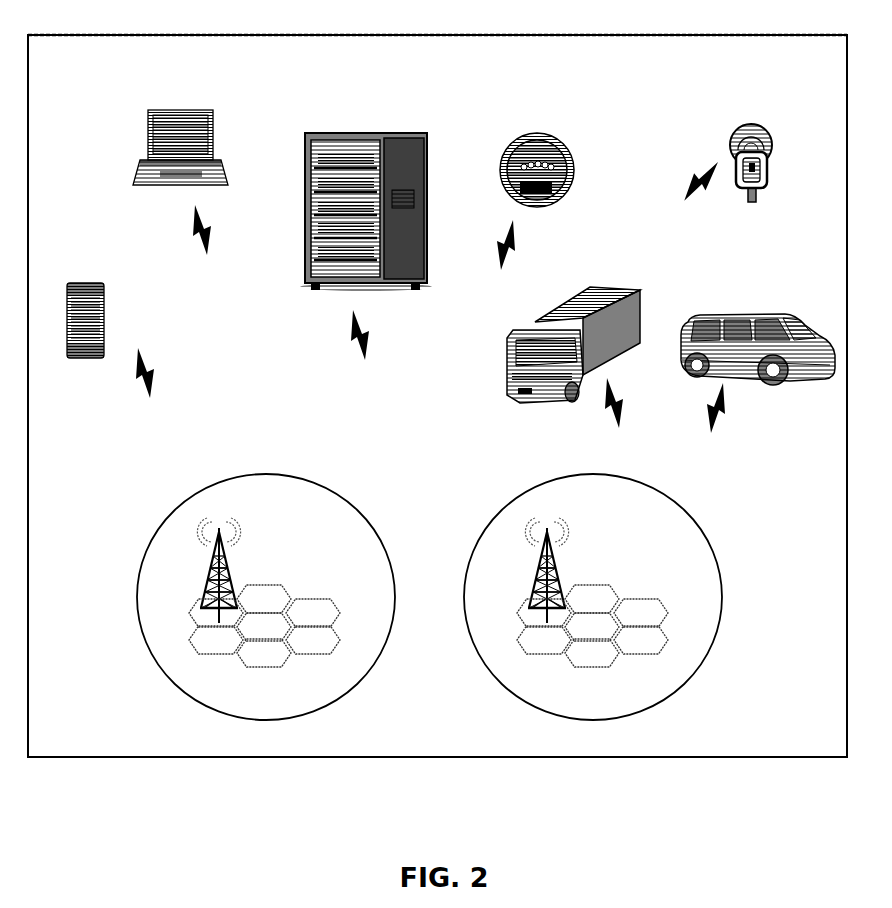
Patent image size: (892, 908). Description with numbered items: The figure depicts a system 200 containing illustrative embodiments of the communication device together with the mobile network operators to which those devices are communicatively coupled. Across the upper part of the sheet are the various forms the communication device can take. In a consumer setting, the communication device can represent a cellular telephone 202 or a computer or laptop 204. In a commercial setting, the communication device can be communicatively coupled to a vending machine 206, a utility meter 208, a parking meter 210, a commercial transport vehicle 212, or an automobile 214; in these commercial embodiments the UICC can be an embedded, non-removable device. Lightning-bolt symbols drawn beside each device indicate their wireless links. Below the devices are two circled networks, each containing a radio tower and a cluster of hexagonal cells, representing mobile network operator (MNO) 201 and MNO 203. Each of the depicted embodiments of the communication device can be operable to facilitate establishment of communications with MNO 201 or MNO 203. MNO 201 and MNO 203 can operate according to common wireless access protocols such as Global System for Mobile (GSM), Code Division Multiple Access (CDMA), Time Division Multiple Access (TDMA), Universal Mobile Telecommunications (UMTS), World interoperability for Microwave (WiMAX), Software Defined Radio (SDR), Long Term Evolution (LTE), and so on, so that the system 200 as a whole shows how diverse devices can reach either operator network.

The system 200 is at (465, 845).
The mobile network operator (MNO) 201 is at (252, 512).
The mobile network operator (MNO) 203 is at (579, 507).
The cellular telephone 202 is at (100, 282).
The computer or laptop 204 is at (212, 112).
The vending machine 206 is at (357, 132).
The utility meter 208 is at (552, 137).
The parking meter 210 is at (768, 132).
The commercial transport vehicle 212 is at (607, 288).
The automobile 214 is at (758, 318).